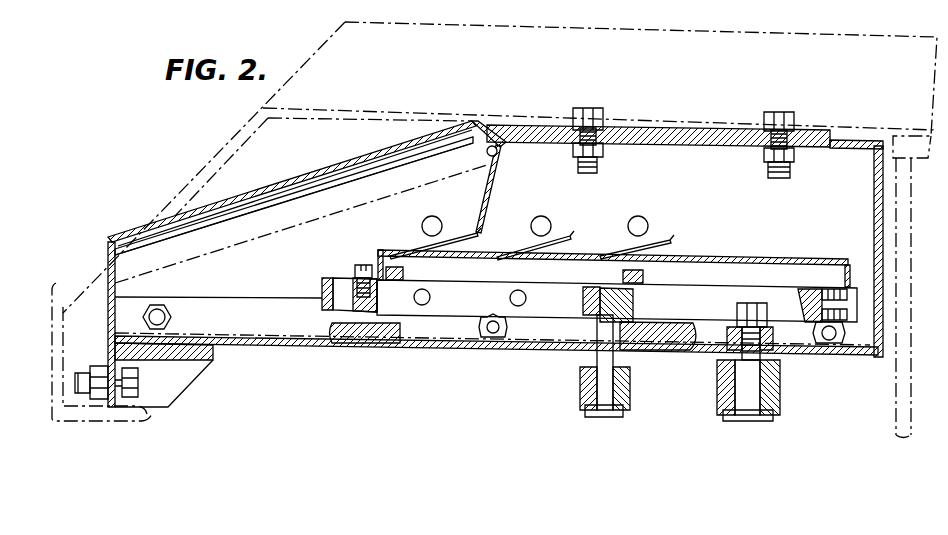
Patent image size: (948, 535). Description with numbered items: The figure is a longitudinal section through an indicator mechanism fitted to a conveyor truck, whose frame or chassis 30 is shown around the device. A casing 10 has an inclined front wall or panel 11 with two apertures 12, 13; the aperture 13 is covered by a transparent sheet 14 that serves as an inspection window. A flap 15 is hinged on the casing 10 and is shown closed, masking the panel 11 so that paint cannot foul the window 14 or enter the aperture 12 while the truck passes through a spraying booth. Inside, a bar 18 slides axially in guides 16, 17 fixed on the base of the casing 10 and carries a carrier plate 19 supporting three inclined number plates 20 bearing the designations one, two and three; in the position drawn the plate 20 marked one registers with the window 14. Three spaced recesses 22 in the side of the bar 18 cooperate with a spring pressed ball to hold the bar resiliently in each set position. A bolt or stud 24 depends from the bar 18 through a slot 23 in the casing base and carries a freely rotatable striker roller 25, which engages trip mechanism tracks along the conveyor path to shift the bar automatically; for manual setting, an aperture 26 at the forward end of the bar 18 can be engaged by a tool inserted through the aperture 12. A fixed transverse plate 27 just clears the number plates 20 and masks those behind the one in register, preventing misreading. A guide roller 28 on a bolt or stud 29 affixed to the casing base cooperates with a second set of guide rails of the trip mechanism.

The casing 10 is at (689, 127).
The inclined front wall or panel 11 is at (317, 196).
The aperture 12 is at (247, 217).
The aperture 13 is at (405, 168).
The transparent sheet 14 is at (383, 160).
The flap 15 is at (270, 188).
The guide 16 is at (393, 267).
The guide 17 is at (645, 279).
The bar 18 is at (540, 308).
The carrier plate 19 is at (718, 253).
The inclined number plates 20 is at (481, 231).
The spaced recesses 22 is at (509, 298).
The slot 23 is at (435, 350).
The bolt or stud 24 is at (605, 334).
The striker roller 25 is at (628, 388).
The aperture 26 is at (330, 291).
The transverse plate 27 is at (500, 178).
The guide roller 28 is at (720, 400).
The bolt or stud 29 is at (752, 384).
The frame or chassis of a truck 30 is at (351, 104).